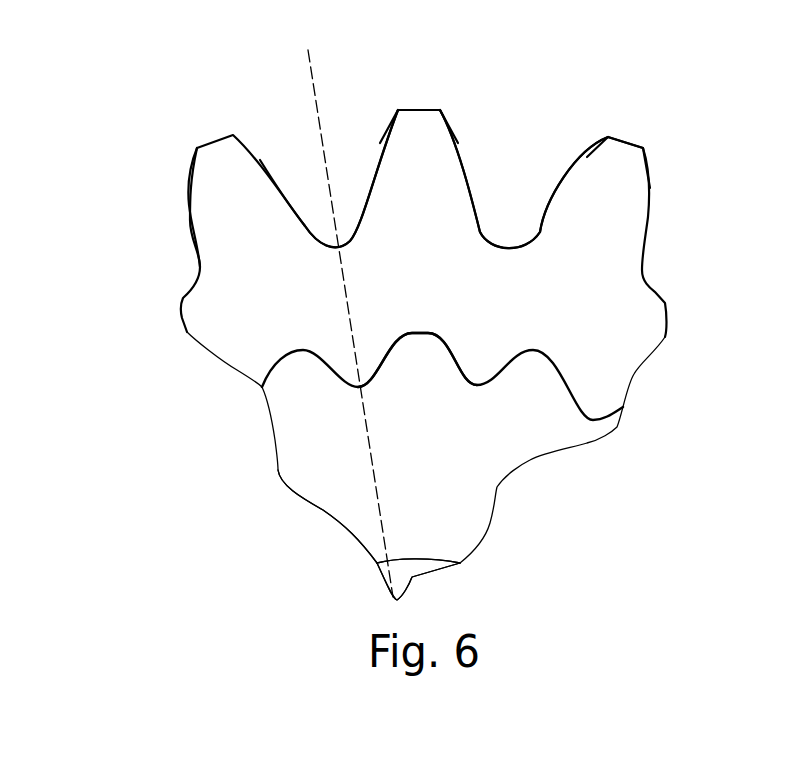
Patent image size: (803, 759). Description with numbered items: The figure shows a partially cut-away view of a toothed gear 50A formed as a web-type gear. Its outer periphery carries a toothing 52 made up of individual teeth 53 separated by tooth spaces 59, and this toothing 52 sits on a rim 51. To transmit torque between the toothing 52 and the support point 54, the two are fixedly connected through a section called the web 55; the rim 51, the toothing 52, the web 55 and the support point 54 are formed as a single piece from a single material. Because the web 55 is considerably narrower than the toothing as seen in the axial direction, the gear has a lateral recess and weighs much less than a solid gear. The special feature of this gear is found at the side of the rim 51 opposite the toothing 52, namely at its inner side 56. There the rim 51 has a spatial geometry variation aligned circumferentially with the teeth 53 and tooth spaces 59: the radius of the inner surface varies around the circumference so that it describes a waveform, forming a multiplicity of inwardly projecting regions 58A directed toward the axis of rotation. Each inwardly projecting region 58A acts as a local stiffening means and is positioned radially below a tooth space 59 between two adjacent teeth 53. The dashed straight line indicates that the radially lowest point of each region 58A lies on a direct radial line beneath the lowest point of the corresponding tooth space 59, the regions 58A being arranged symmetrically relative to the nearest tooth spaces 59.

The toothed gear 50A is at (200, 117).
The rim 51 is at (210, 327).
The toothing 52 is at (165, 213).
The teeth 53 is at (422, 125).
The support point 54 is at (403, 577).
The web 55 is at (337, 499).
The inner side 56 is at (419, 390).
The inwardly projecting regions 58A is at (348, 361).
The tooth space 59 is at (345, 135).